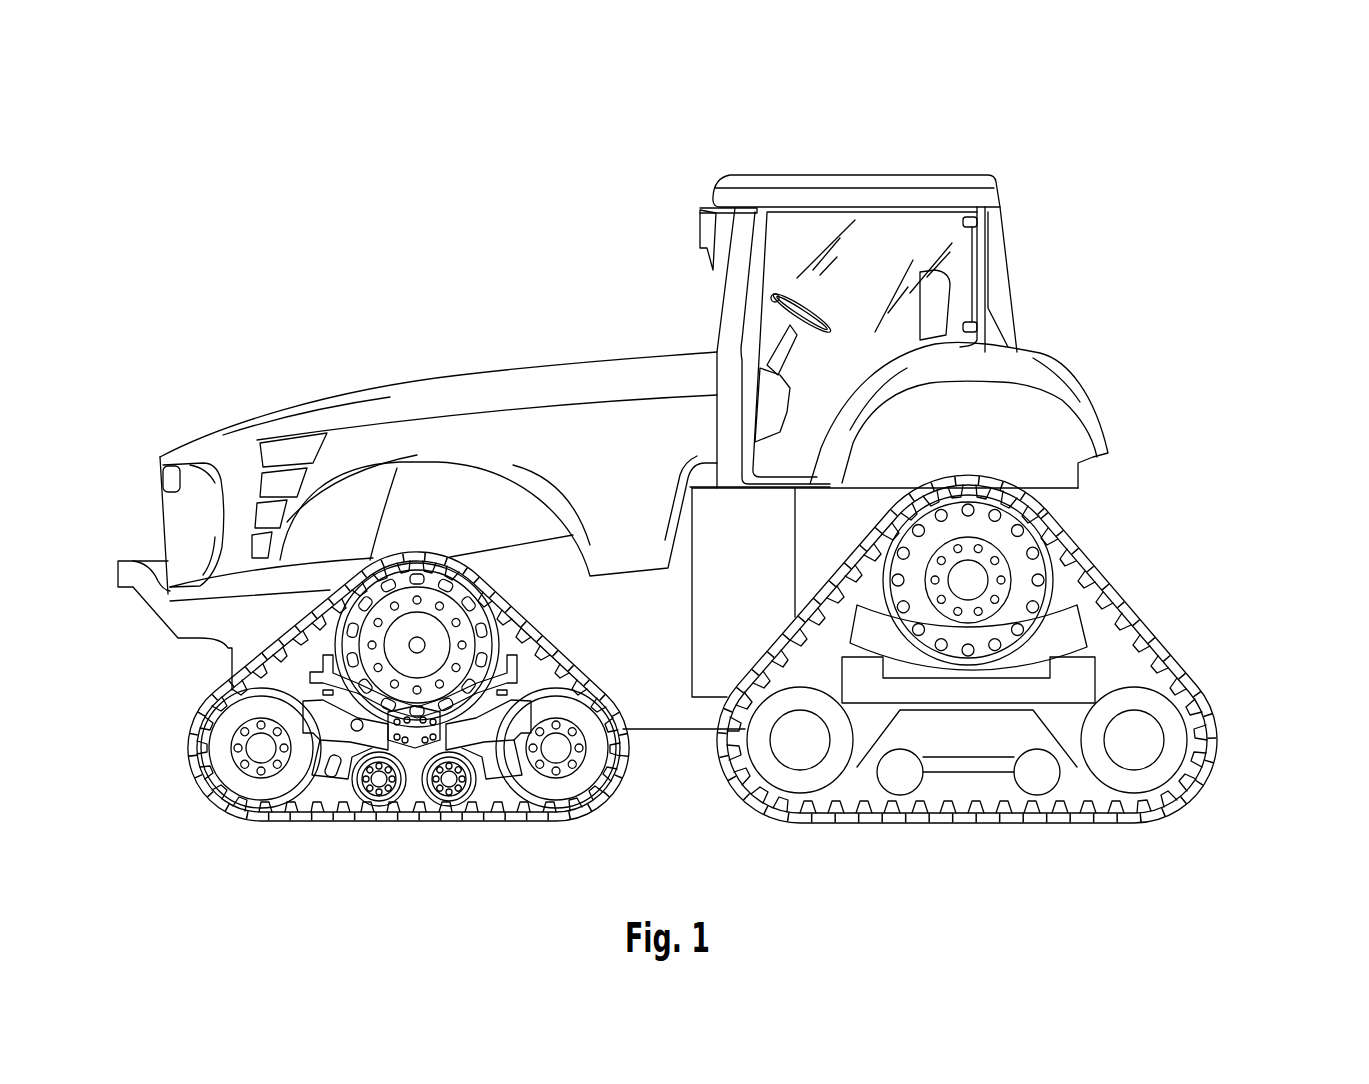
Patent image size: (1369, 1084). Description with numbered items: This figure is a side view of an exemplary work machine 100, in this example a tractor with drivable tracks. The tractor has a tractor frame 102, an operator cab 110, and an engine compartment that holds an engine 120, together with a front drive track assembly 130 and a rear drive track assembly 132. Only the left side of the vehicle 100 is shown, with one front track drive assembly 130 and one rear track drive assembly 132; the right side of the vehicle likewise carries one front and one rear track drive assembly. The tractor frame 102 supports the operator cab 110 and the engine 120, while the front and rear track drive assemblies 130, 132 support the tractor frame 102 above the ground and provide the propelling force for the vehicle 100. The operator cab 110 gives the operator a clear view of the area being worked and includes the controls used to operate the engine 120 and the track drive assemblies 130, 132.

The work machine 100 is at (474, 163).
The tractor frame 102 is at (553, 568).
The operator cab 110 is at (918, 175).
The engine 120 is at (428, 390).
The front drive track assembly 130 is at (186, 779).
The rear drive track assembly 132 is at (1218, 779).